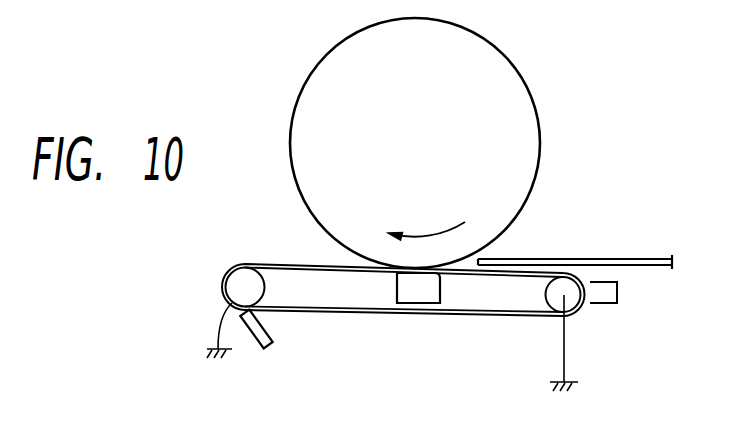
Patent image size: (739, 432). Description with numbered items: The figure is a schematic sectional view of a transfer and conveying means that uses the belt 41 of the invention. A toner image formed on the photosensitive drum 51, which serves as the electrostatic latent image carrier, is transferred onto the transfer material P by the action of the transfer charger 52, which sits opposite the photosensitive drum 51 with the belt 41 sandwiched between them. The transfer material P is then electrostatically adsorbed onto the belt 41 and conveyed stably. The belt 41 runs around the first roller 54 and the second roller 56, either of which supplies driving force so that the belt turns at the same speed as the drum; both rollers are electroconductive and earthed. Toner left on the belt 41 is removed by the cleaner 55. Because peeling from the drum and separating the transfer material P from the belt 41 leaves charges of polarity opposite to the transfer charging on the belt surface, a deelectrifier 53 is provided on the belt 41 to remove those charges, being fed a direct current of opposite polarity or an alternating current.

The photosensitive drum 51 is at (539, 128).
The belt 41 is at (485, 316).
The second roller 56 is at (247, 272).
The first roller 54 is at (576, 311).
The transfer charger 52 is at (397, 288).
The deelectrifier 53 is at (617, 292).
The cleaner 55 is at (268, 348).
The transfer material P is at (627, 258).